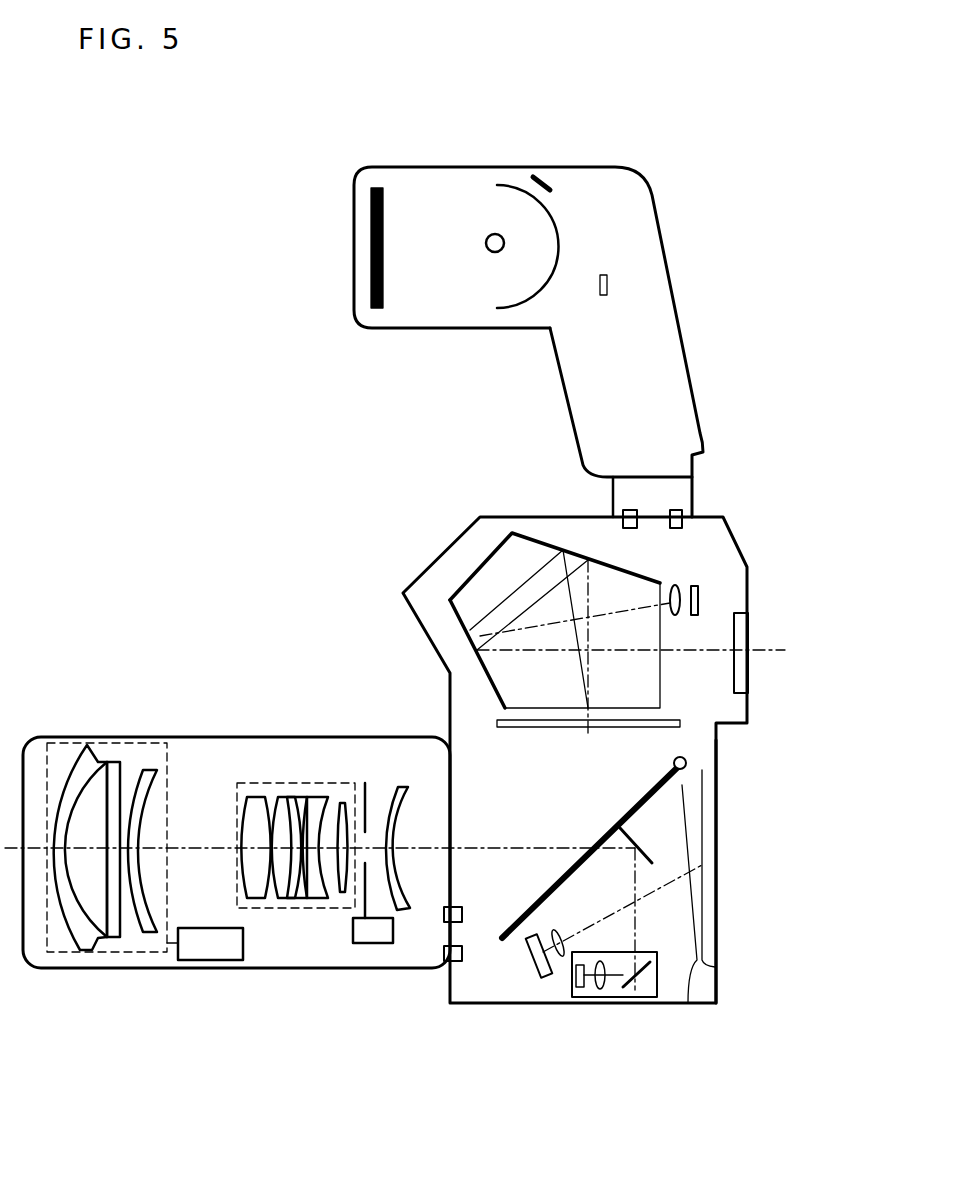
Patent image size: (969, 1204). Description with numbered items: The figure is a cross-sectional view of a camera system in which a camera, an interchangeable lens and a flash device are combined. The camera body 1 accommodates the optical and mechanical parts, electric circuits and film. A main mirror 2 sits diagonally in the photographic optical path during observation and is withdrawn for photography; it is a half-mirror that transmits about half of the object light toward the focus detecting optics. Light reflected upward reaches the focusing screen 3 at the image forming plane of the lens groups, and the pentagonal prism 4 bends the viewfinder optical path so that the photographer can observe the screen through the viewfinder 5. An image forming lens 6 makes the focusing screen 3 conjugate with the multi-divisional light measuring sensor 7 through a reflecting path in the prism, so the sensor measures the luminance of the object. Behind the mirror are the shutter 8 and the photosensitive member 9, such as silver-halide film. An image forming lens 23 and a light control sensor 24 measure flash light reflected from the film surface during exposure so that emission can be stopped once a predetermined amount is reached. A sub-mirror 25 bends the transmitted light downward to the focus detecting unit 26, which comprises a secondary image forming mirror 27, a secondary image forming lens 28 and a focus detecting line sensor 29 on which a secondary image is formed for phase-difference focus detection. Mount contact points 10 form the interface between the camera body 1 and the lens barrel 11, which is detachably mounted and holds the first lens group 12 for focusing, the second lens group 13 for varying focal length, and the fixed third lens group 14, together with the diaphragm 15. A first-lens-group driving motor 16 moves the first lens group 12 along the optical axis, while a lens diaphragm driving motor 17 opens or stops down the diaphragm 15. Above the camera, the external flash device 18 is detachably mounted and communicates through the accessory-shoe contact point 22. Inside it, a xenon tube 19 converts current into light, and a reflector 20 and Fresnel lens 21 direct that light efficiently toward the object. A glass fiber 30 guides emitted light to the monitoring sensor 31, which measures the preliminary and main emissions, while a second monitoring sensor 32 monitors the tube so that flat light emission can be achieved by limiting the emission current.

The camera body 1 is at (433, 585).
The main mirror 2 is at (660, 790).
The focusing screen 3 is at (683, 728).
The pentagonal prism 4 is at (483, 558).
The viewfinder 5 is at (740, 610).
The image forming lens 6 is at (673, 587).
The multi-divisional light measuring sensor 7 is at (693, 584).
The shutter 8 is at (703, 990).
The photosensitive member 9 is at (716, 967).
The mount contact points 10 is at (470, 990).
The lens barrel 11 is at (45, 740).
The first lens group 12 is at (135, 740).
The second lens group 13 is at (303, 782).
The third lens group 14 is at (405, 787).
The diaphragm 15 is at (367, 783).
The first-lens-group driving motor 16 is at (222, 960).
The lens diaphragm driving motor 17 is at (358, 943).
The external flash device 18 is at (633, 203).
The xenon tube 19 is at (487, 245).
The reflector 20 is at (513, 308).
The Fresnel lens 21 is at (372, 278).
The accessory-shoe contact point 22 is at (627, 508).
The image forming lens 23 is at (560, 990).
The light control sensor 24 is at (523, 990).
The sub-mirror 25 is at (655, 856).
The focus detecting unit 26 is at (663, 997).
The secondary image forming mirror 27 is at (647, 997).
The secondary image forming lens 28 is at (612, 997).
The focus detecting line sensor 29 is at (587, 997).
The glass fiber 30 is at (590, 285).
The monitoring sensor (PD1) 31 is at (612, 279).
The monitoring sensor (PD2) 32 is at (552, 175).